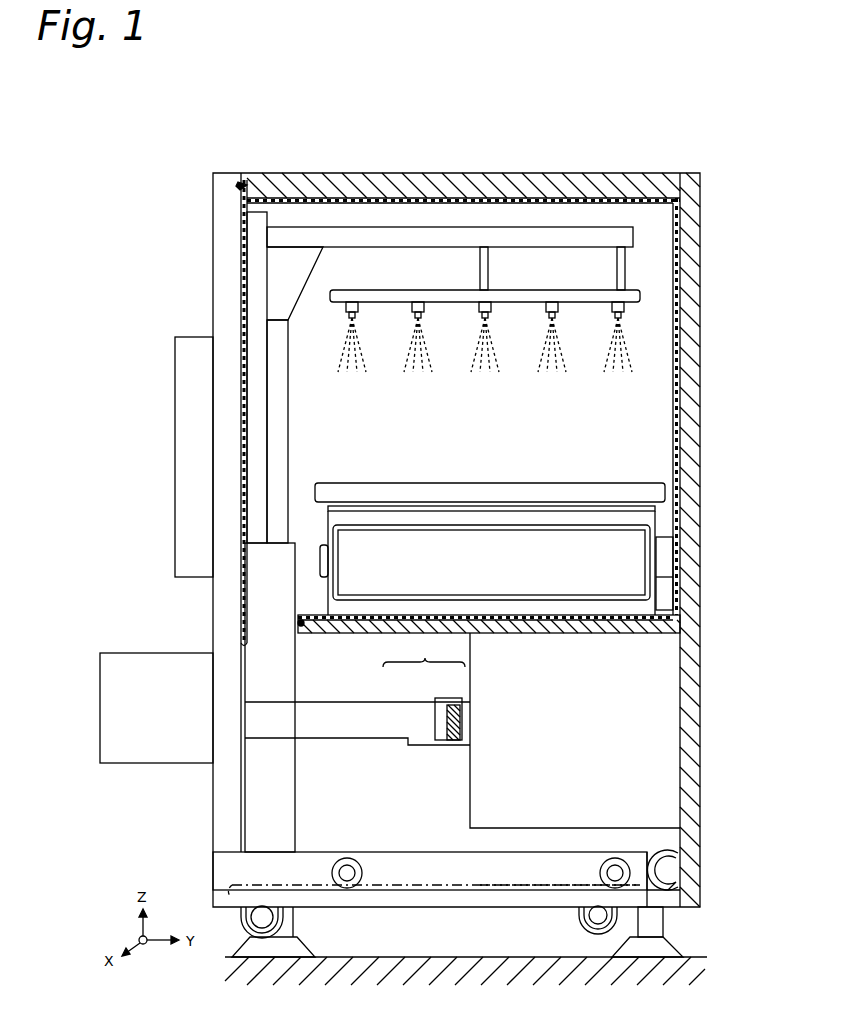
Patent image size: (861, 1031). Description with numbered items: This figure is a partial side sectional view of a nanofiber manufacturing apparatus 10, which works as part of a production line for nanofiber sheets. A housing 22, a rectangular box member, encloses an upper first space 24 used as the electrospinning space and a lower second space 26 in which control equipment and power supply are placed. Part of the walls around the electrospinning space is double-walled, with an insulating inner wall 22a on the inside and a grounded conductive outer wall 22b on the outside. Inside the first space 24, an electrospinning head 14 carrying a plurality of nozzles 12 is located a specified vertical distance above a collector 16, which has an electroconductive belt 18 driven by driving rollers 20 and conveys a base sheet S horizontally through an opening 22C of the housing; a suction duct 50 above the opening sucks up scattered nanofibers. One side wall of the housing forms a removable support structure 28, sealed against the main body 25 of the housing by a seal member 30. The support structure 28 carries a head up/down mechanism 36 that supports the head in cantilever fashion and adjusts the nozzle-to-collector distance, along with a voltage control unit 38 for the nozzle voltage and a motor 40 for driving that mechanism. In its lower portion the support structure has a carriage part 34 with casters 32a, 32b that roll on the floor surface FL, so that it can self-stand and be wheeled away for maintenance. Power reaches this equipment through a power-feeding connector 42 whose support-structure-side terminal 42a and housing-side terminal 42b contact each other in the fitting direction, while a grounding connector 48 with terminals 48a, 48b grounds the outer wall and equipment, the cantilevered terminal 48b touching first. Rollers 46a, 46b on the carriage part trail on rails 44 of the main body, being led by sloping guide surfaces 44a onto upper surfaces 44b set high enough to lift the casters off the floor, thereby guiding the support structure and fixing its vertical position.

The nanofiber manufacturing apparatus 10 is at (196, 144).
The nozzles 12 is at (347, 310).
The electrospinning head 14 is at (492, 228).
The collector 16 is at (571, 523).
The belt 18 is at (506, 566).
The driving rollers 20 is at (676, 578).
The housing 22 is at (340, 178).
The inner wall 22a is at (652, 204).
The outer wall 22b is at (622, 176).
The opening 22C is at (324, 548).
The first space 24 is at (490, 427).
The main body 25 is at (302, 175).
The second space 26 is at (346, 804).
The support structure 28 is at (213, 216).
The seal member 30 is at (246, 183).
The caster 32a is at (608, 935).
The caster 32b is at (268, 940).
The carriage part 34 is at (424, 852).
The head up/down mechanism 36 is at (289, 428).
The voltage control unit 38 is at (206, 450).
The motor 40 is at (166, 719).
The power-feeding connector 42 is at (424, 651).
The support structure-side power feeding terminal 42a is at (438, 700).
The housing-side power feeding terminal 42b is at (452, 705).
The rails 44 is at (436, 874).
The guide surfaces 44a is at (240, 887).
The upper surfaces 44b is at (500, 885).
The roller 46a is at (600, 873).
The roller 46b is at (362, 873).
The grounding connector 48 is at (758, 826).
The support structure-side grounding terminal 48a is at (683, 853).
The housing-side grounding terminal 48b is at (683, 885).
The suction duct 50 is at (506, 483).
The base sheet S is at (676, 520).
The floor surface FL is at (688, 957).